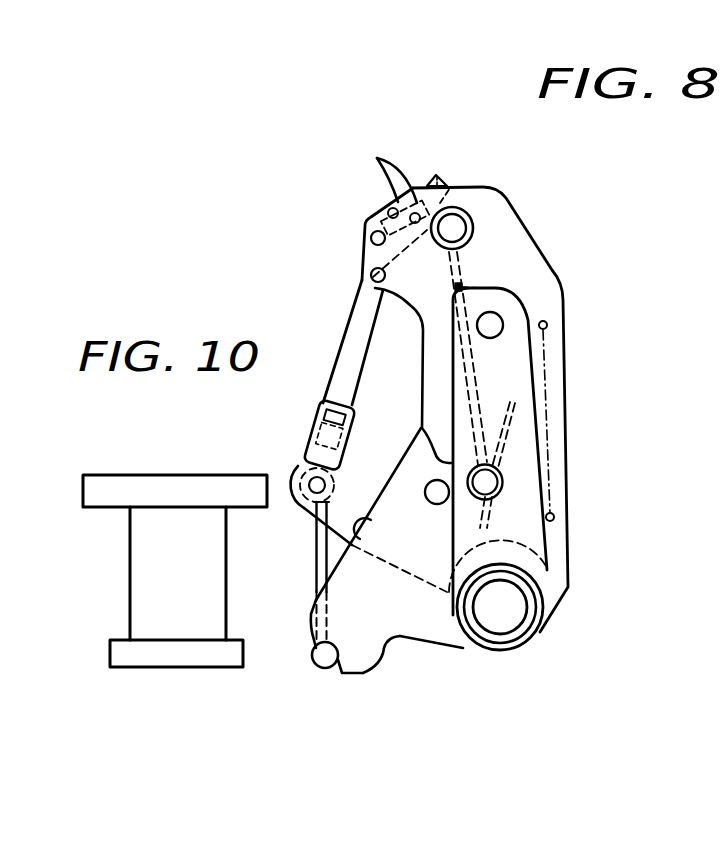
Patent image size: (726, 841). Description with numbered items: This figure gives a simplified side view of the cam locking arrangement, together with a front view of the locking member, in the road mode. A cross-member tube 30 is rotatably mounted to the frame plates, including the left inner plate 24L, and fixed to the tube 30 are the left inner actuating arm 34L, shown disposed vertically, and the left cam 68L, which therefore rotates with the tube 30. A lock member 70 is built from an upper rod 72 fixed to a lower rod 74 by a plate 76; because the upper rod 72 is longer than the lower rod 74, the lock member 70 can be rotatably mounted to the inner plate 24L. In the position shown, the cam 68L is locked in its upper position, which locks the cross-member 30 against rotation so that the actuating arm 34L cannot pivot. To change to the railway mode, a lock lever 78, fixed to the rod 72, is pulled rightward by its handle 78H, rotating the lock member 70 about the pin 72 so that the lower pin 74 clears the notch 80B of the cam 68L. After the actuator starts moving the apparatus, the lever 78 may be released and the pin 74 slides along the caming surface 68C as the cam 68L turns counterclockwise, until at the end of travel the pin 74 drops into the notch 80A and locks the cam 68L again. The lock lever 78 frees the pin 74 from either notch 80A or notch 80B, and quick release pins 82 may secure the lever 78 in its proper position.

In FIG. 8, the left inner plate 24L is at (566, 295).
In FIG. 8, the cross-member tube 30 is at (547, 628).
In FIG. 8, the left inner actuating arm 34L is at (553, 547).
In FIG. 8, the caming surface 68C is at (382, 648).
In FIG. 8, the left cam 68L is at (400, 647).
In FIG. 8, the lock member 70 is at (312, 528).
In FIG. 10, the lock member 70 is at (172, 559).
In FIG. 8, the upper rod 72 is at (297, 464).
In FIG. 10, the upper rod 72 is at (185, 480).
In FIG. 8, the lower rod 74 is at (317, 672).
In FIG. 10, the lower rod 74 is at (167, 667).
In FIG. 8, the plate 76 is at (317, 567).
In FIG. 10, the plate 76 is at (128, 588).
In FIG. 8, the lock lever 78 is at (355, 300).
In FIG. 8, the handle 78H is at (437, 177).
In FIG. 8, the notch 80A is at (413, 413).
In FIG. 8, the notch 80B is at (334, 677).
In FIG. 8, the quick release pins 82 is at (382, 175).